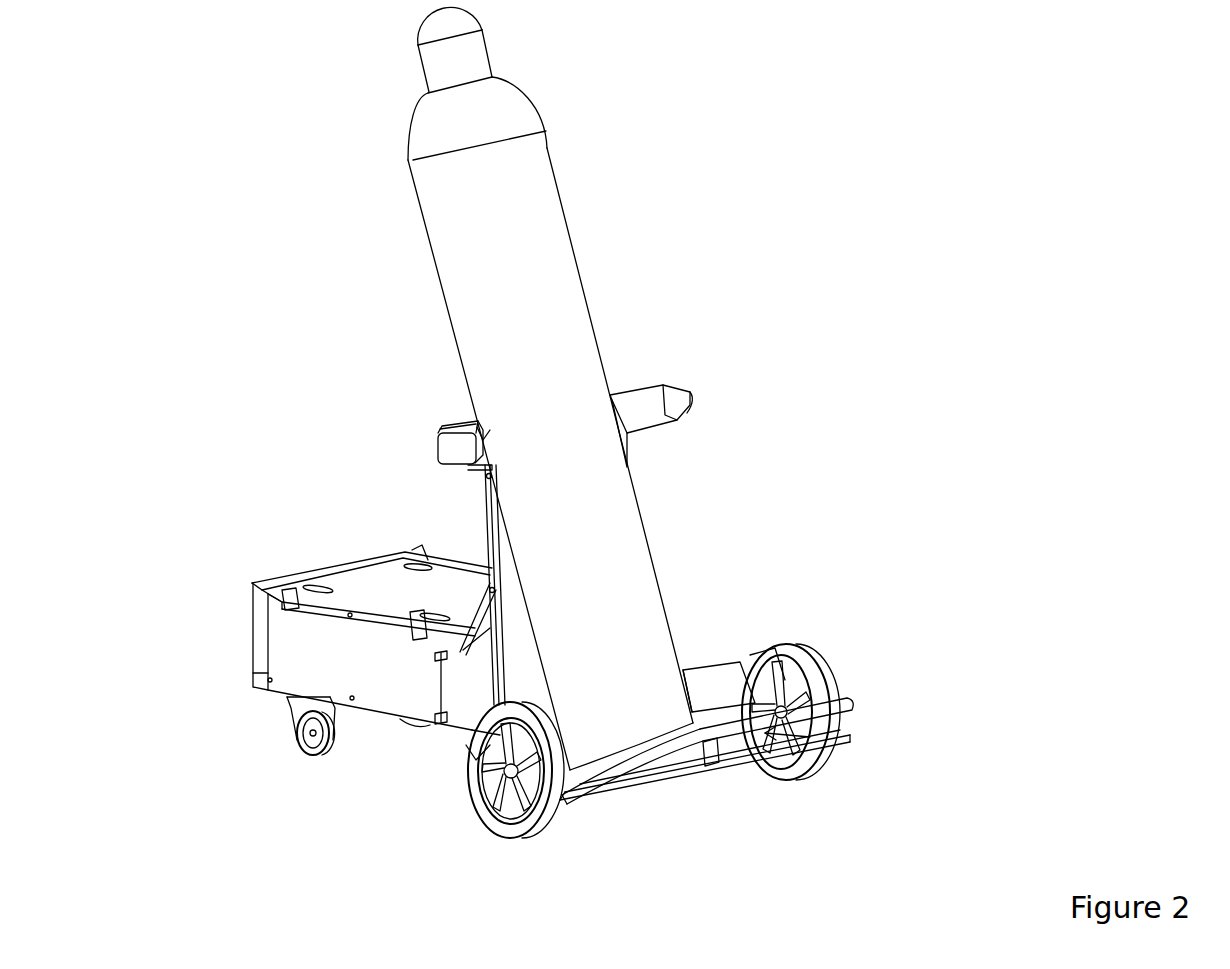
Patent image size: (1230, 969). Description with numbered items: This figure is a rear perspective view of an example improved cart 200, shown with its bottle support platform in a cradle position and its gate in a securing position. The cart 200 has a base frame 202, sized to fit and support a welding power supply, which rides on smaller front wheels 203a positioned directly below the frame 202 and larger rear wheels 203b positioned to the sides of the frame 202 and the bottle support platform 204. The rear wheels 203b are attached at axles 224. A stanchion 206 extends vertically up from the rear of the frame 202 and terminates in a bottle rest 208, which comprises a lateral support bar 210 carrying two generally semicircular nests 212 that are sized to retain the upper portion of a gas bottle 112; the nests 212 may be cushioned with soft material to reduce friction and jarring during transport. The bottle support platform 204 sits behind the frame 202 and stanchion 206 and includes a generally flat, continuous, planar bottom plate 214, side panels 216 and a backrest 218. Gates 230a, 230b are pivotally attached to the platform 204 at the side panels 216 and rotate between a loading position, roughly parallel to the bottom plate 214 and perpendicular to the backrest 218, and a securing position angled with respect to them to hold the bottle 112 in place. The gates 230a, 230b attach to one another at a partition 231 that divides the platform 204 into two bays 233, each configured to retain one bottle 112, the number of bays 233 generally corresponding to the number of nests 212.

The cart 200 is at (172, 170).
The bottle 112 is at (537, 210).
The nests 212 is at (477, 427).
The lateral support bar 210 is at (440, 447).
The bottle rest 208 is at (400, 455).
The stanchion 206 is at (490, 522).
The base frame 202 is at (315, 651).
The front wheels 203a is at (305, 765).
The rear wheels 203b is at (480, 783).
The axles 224 is at (470, 757).
The bottle support platform 204 is at (712, 633).
The backrest 218 is at (692, 722).
The side panels 216 is at (760, 658).
The gate 230b is at (850, 700).
The bays 233 is at (845, 710).
The gate 230a is at (600, 790).
The partition 231 is at (705, 768).
The bottom plate 214 is at (650, 785).